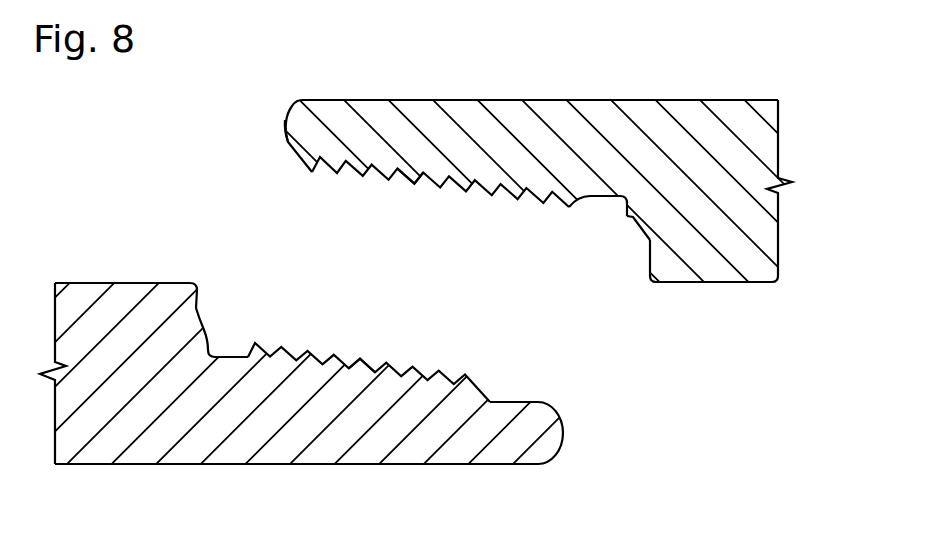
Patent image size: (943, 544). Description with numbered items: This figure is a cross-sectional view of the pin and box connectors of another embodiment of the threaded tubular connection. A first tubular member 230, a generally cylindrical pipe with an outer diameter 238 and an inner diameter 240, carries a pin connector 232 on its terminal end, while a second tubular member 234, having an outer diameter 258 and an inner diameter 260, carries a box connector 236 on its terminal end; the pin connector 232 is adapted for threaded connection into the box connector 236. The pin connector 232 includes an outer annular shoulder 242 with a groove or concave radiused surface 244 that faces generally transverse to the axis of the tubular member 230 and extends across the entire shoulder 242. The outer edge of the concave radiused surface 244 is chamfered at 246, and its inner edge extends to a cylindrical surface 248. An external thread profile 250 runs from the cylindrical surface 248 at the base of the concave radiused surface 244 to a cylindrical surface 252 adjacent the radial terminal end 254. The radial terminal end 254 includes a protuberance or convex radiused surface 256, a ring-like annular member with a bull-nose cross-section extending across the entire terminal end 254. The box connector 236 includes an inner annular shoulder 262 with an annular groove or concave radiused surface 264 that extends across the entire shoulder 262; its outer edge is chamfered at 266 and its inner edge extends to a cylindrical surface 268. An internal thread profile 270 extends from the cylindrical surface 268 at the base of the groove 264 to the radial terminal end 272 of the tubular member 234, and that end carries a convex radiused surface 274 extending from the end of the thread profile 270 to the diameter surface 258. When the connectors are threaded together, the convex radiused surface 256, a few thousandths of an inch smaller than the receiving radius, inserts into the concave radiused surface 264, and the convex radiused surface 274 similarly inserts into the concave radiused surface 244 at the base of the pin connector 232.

The first tubular member 230 is at (147, 450).
The pin connector 232 is at (408, 352).
The second tubular member 234 is at (762, 238).
The box connector 236 is at (415, 205).
The outer diameter 238 is at (107, 283).
The inner diameter 240 is at (325, 464).
The outer annular shoulder 242 is at (243, 288).
The concave radiused surface 244 is at (203, 318).
The chamfer 246 is at (198, 283).
The cylindrical surface 248 is at (225, 356).
The external thread profile 250 is at (372, 362).
The cylindrical surface 252 is at (518, 402).
The radial terminal end 254 is at (625, 449).
The convex radiused surface 256 is at (563, 423).
The outer diameter 258 is at (638, 100).
The inner diameter 260 is at (713, 282).
The inner annular shoulder 262 is at (606, 280).
The concave radiused surface 264 is at (643, 228).
The chamfer 266 is at (650, 270).
The cylindrical surface 268 is at (610, 197).
The internal thread profile 270 is at (417, 186).
The radial terminal end 272 is at (239, 124).
The convex radiused surface 274 is at (283, 130).